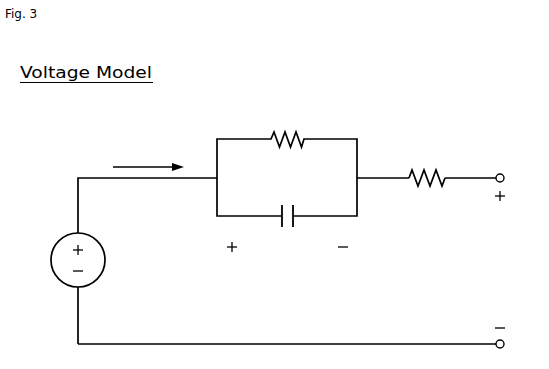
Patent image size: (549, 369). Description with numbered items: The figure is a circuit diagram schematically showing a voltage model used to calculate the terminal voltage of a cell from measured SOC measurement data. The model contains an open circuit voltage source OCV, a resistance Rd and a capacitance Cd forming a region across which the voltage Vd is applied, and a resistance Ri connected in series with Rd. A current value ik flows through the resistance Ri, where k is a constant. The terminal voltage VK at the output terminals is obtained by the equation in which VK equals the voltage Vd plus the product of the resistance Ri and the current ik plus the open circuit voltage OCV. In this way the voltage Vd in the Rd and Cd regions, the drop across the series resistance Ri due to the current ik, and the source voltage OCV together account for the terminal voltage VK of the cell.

The open circuit voltage OCV is at (60, 260).
The current value ik is at (148, 155).
The resistance Rd is at (287, 142).
The capacitance Cd is at (287, 202).
The voltage Vd is at (287, 250).
The resistance Ri is at (427, 165).
The terminal voltage VK is at (500, 259).